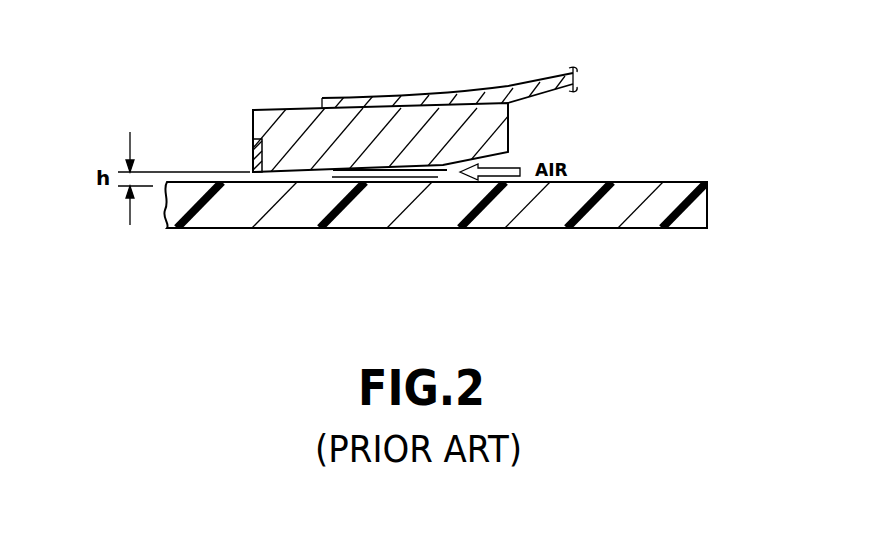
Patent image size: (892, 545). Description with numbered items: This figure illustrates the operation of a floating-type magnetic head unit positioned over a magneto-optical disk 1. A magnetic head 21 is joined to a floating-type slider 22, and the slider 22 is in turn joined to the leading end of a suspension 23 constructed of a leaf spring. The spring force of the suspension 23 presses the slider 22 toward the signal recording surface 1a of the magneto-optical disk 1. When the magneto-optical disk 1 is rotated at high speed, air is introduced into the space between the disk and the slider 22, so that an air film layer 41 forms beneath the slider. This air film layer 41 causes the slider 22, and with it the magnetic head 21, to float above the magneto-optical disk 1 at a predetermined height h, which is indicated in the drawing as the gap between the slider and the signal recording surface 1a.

The magneto-optical disk 1 is at (715, 195).
The signal recording surface 1a is at (678, 181).
The magnetic head 21 is at (252, 152).
The floating-type slider 22 is at (514, 118).
The suspension 23 is at (522, 86).
The air film layer 41 is at (372, 177).